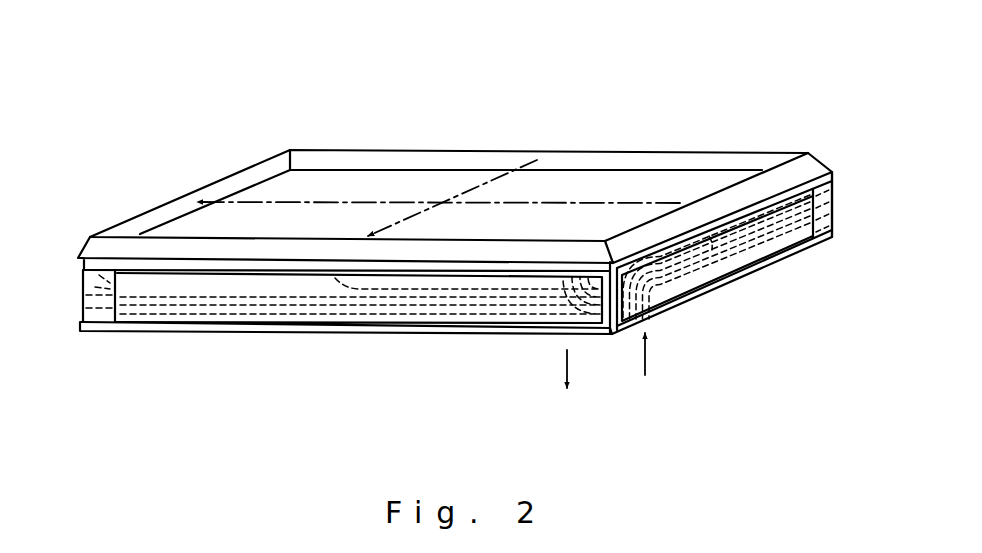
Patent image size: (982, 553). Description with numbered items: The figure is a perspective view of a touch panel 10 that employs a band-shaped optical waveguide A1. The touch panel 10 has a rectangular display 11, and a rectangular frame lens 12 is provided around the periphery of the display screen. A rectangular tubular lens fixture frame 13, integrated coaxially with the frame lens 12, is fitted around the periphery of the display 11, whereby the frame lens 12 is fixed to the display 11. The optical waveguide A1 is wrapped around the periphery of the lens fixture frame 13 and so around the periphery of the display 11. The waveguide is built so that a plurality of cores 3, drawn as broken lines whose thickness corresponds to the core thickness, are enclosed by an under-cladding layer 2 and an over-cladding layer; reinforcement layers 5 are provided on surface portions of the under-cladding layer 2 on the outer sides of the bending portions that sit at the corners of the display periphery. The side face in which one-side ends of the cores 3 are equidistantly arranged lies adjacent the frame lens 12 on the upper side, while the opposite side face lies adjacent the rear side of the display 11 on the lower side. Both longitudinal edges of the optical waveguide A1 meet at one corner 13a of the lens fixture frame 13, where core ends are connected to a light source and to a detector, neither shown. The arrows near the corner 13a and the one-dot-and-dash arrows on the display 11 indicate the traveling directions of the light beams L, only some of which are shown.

The touch panel 10 is at (330, 110).
The display 11 is at (560, 185).
The frame lens 12 is at (217, 182).
The light beams L is at (353, 202).
The under-cladding layer 2 is at (305, 322).
The cores 3 is at (168, 300).
The reinforcement layers 5 is at (82, 290).
The lens fixture frame 13 is at (408, 332).
The corner of lens fixture frame 13a is at (618, 333).
The optical waveguide A1 is at (755, 262).